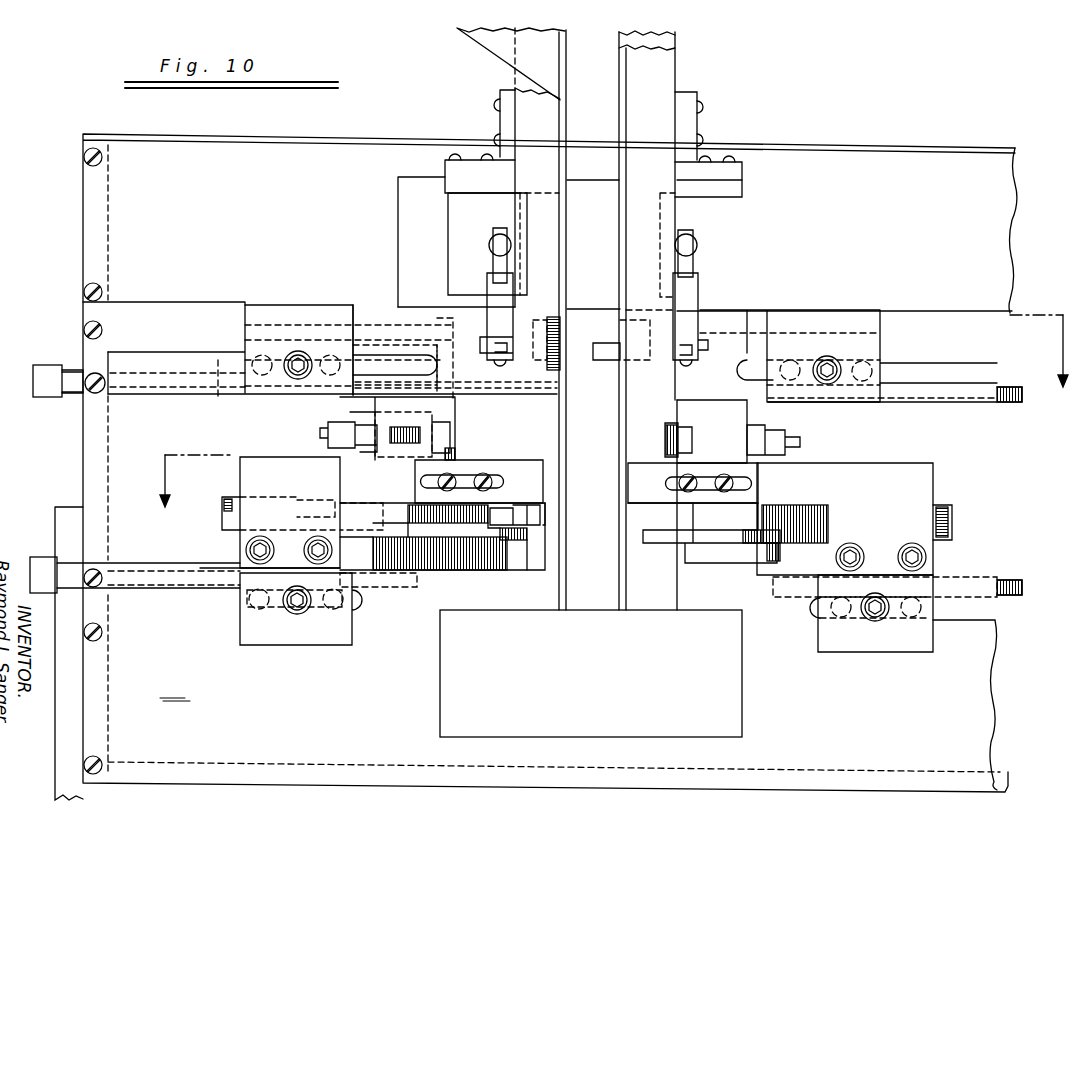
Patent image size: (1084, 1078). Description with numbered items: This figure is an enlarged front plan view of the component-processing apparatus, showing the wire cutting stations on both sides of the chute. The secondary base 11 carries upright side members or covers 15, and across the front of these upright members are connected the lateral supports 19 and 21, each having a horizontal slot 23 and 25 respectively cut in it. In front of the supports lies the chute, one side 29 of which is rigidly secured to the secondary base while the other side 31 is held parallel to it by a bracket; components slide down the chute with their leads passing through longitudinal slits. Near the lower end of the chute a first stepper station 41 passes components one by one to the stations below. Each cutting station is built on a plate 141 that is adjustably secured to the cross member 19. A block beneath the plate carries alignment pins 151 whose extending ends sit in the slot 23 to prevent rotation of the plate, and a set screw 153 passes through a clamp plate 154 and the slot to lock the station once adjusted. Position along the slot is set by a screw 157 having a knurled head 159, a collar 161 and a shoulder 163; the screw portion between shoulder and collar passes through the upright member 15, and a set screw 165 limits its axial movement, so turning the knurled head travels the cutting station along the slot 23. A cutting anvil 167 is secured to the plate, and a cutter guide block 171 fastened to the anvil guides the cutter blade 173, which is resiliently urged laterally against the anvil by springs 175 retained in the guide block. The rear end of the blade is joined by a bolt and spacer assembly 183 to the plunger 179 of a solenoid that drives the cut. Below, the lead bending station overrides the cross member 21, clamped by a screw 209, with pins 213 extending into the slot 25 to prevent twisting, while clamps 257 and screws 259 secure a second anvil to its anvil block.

The secondary base 11 is at (609, 425).
The upright side members or covers 15 is at (83, 239).
The lateral support 19 is at (195, 302).
The lateral support 21 is at (175, 689).
The horizontal slot 23 is at (175, 366).
The horizontal slot 25 is at (147, 602).
The side of the chute 29 is at (564, 500).
The other side of the chute 31 is at (620, 440).
The first stepper station 41 is at (488, 338).
The plate 141 is at (378, 330).
The alignment pins 151 is at (245, 362).
The set screw 153 is at (298, 351).
The clamp plate 154 is at (354, 305).
The screw 157 is at (219, 394).
The knurled head 159 is at (36, 364).
The collar 161 is at (114, 370).
The shoulder 163 is at (70, 369).
The set screw 165 is at (93, 396).
The cutting anvil 167 is at (448, 378).
The cutter guide block 171 is at (360, 412).
The cutter blade 173 is at (440, 425).
The springs 175 is at (397, 428).
The plunger 179 is at (330, 447).
The bolt and spacer assembly 183 is at (360, 454).
The screw 209 is at (299, 614).
The pins 213 is at (260, 606).
The clamps 257 is at (519, 460).
The screws 259 is at (483, 477).